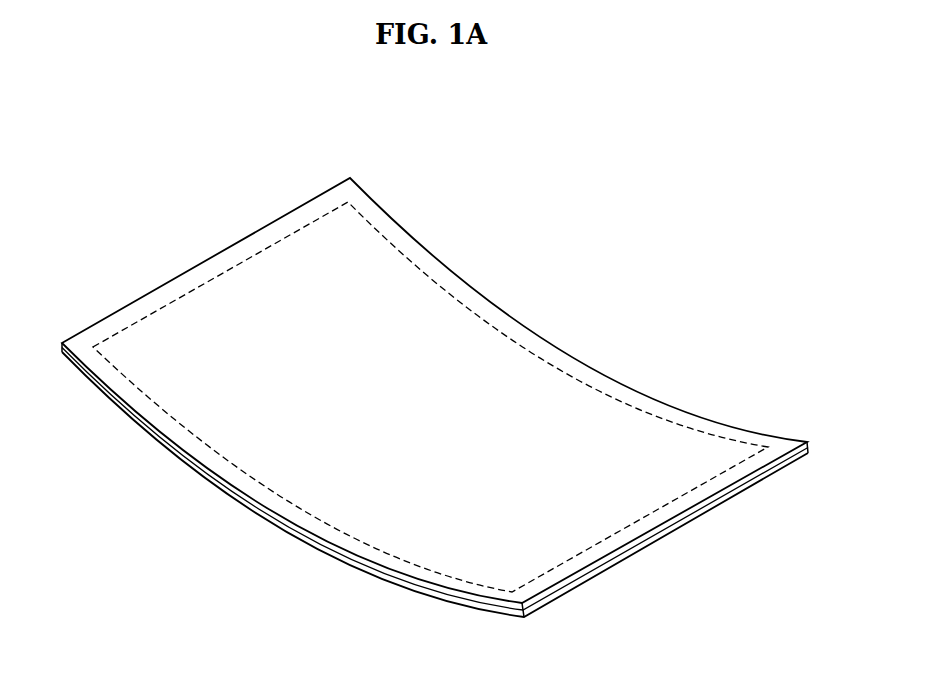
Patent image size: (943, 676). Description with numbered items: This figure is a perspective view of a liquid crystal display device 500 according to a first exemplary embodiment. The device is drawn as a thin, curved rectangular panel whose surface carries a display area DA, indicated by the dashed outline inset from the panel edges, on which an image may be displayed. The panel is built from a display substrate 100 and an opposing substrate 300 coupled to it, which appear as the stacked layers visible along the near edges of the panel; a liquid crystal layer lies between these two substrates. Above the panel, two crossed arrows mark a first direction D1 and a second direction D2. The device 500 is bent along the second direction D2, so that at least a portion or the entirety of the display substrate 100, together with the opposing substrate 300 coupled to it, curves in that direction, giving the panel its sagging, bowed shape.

The liquid crystal display device 500 is at (604, 275).
The display area DA is at (640, 408).
The opposing substrate 300 is at (583, 574).
The display substrate 100 is at (631, 556).
The first direction D1 is at (390, 87).
The second direction D2 is at (307, 87).